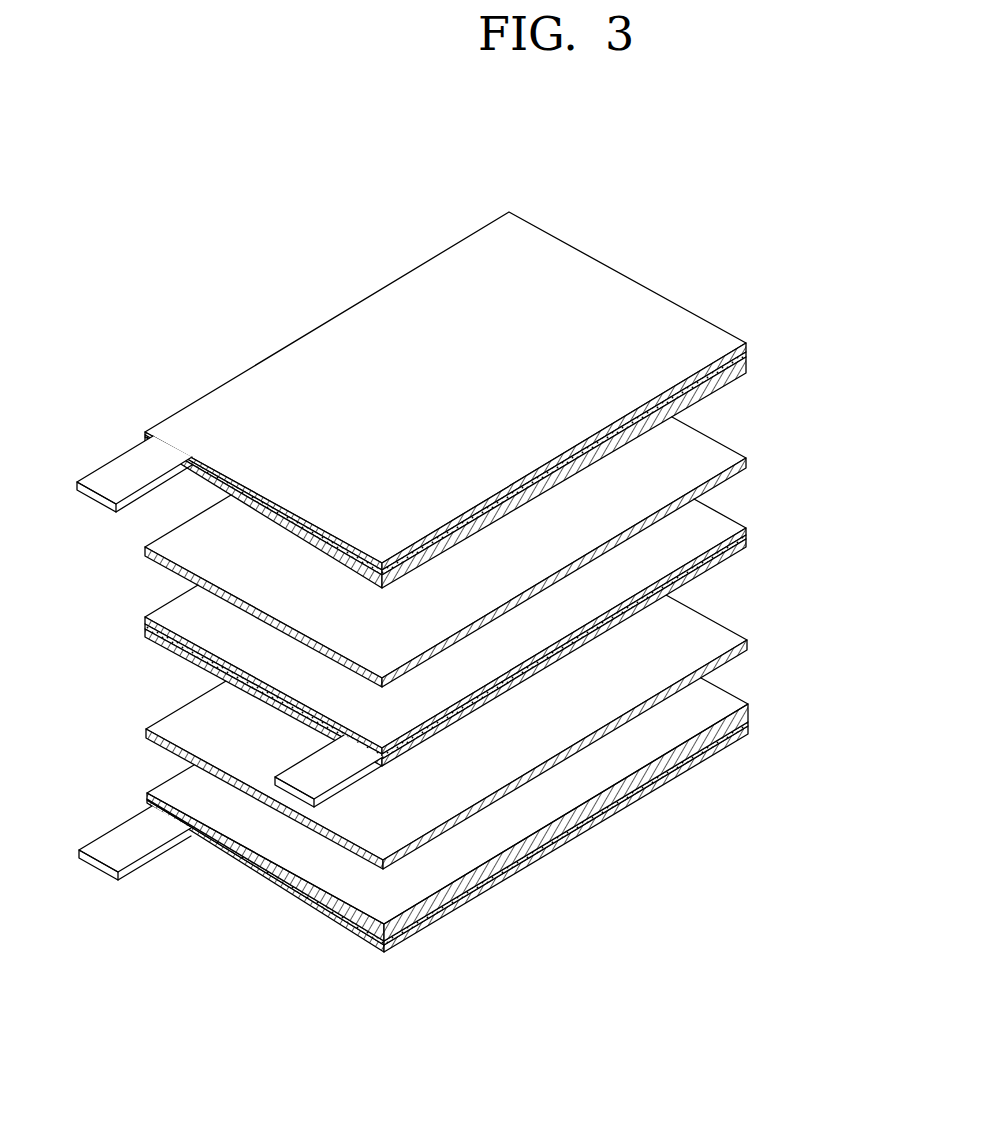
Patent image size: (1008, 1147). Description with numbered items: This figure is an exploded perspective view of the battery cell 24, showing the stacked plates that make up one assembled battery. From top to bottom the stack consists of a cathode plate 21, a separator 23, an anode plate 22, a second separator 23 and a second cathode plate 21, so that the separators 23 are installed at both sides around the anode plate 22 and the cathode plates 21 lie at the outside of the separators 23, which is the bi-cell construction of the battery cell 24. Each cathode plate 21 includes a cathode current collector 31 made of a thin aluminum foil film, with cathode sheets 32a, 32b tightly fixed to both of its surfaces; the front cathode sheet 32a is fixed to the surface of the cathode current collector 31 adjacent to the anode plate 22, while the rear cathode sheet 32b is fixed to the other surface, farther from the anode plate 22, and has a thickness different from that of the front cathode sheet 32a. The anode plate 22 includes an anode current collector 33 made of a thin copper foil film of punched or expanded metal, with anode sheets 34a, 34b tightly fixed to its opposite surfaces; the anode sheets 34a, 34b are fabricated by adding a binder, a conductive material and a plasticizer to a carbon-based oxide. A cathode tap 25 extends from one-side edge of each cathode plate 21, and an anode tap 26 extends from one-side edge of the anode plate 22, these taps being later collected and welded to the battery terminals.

The cathode plate 21 is at (526, 582).
The anode plate 22 is at (524, 632).
The separator 23 is at (730, 476).
The battery cell 24 is at (296, 269).
The cathode tap 25 is at (125, 483).
The anode tap 26 is at (315, 775).
The cathode current collector 31 is at (748, 354).
The front cathode sheet 32a is at (740, 383).
The rear cathode sheet 32b is at (748, 344).
The anode current collector 33 is at (723, 563).
The anode sheet 34a is at (748, 547).
The anode sheet 34b is at (693, 582).